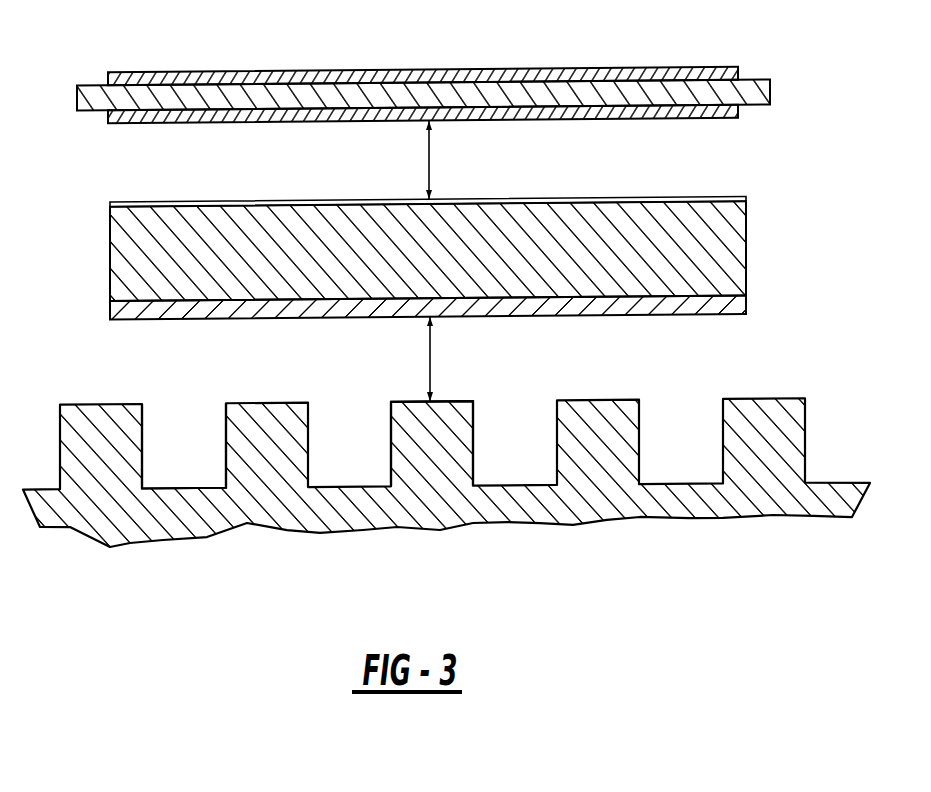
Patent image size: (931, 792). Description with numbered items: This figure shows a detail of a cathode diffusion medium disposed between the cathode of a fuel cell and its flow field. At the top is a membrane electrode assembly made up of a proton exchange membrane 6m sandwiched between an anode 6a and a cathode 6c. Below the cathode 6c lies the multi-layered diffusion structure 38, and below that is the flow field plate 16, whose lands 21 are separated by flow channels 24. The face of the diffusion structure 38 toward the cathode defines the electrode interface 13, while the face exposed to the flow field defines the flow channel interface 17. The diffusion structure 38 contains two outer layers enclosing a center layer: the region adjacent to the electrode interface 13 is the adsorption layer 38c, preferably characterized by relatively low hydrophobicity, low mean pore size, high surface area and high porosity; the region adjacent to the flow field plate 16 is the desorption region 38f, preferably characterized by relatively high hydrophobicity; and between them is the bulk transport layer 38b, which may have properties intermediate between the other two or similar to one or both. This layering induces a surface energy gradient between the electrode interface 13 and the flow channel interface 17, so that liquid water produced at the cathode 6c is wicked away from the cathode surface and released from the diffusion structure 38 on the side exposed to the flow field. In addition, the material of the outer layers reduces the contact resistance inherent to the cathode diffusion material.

The anode 6a is at (740, 74).
The PEM 6m is at (771, 93).
The cathode 6c is at (739, 120).
The electrode interface 13 is at (426, 163).
The multi-layered diffusion structure 38 is at (482, 255).
The adsorption layer 38c is at (572, 199).
The bulk transport layer 38b is at (746, 238).
The desorption region 38f is at (457, 330).
The flow channel interface 17 is at (426, 360).
The flow field plate 16 is at (446, 503).
The lands 21 is at (430, 443).
The flow channel 24 is at (193, 449).